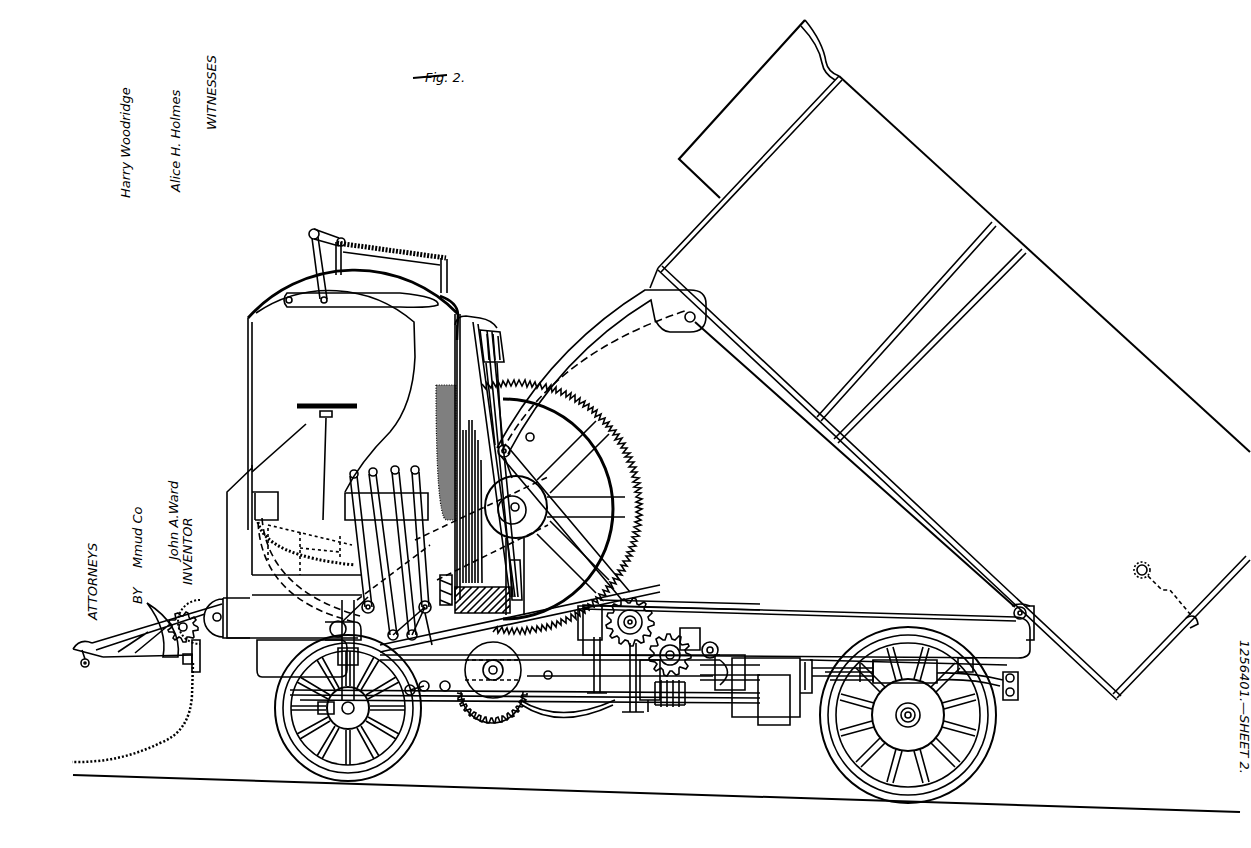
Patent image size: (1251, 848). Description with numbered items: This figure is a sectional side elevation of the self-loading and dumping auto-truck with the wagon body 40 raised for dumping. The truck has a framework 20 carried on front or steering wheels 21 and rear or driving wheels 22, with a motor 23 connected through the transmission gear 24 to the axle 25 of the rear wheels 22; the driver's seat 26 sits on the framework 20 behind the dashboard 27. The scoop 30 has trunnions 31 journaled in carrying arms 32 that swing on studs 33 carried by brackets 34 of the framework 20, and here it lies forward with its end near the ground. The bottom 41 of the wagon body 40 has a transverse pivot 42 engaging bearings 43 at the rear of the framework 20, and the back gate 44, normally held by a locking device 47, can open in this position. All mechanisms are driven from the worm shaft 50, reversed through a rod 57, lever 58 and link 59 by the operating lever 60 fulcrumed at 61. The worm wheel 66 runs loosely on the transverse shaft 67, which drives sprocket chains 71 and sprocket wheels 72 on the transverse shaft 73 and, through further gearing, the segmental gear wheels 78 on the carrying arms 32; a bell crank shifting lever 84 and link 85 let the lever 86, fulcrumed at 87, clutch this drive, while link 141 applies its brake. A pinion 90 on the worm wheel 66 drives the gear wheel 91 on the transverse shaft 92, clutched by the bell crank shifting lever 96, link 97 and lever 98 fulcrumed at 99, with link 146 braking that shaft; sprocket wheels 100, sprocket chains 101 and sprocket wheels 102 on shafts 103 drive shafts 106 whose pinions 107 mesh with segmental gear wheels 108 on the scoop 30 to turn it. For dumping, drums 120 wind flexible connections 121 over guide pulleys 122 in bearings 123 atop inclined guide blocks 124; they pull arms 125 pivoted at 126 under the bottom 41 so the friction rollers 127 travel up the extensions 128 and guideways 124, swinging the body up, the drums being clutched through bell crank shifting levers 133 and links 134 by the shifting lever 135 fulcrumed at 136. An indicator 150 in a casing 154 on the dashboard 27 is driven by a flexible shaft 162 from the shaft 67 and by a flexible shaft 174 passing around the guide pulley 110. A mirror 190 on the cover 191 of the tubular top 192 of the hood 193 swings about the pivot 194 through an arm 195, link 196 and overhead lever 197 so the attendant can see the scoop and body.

The framework 20 is at (822, 618).
The front or steering wheels 21 is at (280, 728).
The rear or driving wheels 22 is at (985, 728).
The motor 23 is at (294, 566).
The transmission gear 24 is at (773, 658).
The axle 25 is at (908, 706).
The driver's seat 26 is at (418, 390).
The dashboard 27 is at (228, 518).
The scoop 30 is at (165, 725).
The trunnions 31 is at (89, 665).
The carrying arms 32 is at (127, 638).
The studs 33 is at (452, 461).
The brackets 34 is at (330, 628).
The wagon body 40 is at (954, 313).
The bottom 41 is at (1000, 592).
The transverse pivot 42 is at (1012, 612).
The bearings 43 is at (1036, 620).
The back gate 44 is at (1210, 588).
The locking device 47 is at (1170, 586).
The worm shaft 50 is at (688, 706).
The rod 57 is at (735, 715).
The lever 58 is at (700, 670).
The link 59 is at (706, 656).
The operating lever 60 is at (350, 488).
The fulcrum 61 is at (363, 602).
The worm wheel 66 is at (704, 642).
The transverse shaft 67 is at (688, 628).
The sprocket chains 71 is at (600, 700).
The sprocket wheels 72 is at (570, 712).
The transverse shaft 73 is at (543, 675).
The segmental gear wheels 78 is at (622, 466).
The bell crank shifting lever 84 is at (632, 712).
The link 85 is at (444, 700).
The lever 86 is at (376, 472).
The fulcrum 87 is at (356, 668).
The pinion 90 is at (700, 614).
The gear wheel 91 is at (636, 606).
The transverse shaft 92 is at (668, 640).
The bell crank shifting lever 96 is at (589, 590).
The link 97 is at (440, 700).
The lever 98 is at (395, 470).
The fulcrum 99 is at (430, 609).
The sprocket wheels 100 is at (178, 666).
The sprocket chains 101 is at (226, 600).
The sprocket wheels 102 is at (222, 600).
The shafts 103 is at (222, 617).
The shafts 106 is at (183, 612).
The pinions 107 is at (200, 654).
The segmental gear wheels 108 is at (160, 605).
The guide pulley 110 is at (538, 500).
The drums 120 is at (512, 712).
The flexible connections 121 is at (516, 575).
The guide pulleys 122 is at (504, 332).
The bearings 123 is at (486, 322).
The inclined guide blocks 124 is at (492, 463).
The arms 125 is at (534, 433).
The pivot 126 is at (687, 322).
The friction rollers 127 is at (511, 453).
The extensions 128 is at (655, 702).
The bell crank shifting levers 133 is at (492, 676).
The links 134 is at (420, 690).
The shifting lever 135 is at (418, 470).
The fulcrum 136 is at (450, 590).
The link 141 is at (570, 636).
The link 146 is at (474, 612).
The indicator 150 is at (279, 457).
The casing 154 is at (278, 508).
The flexible shaft 162 is at (258, 548).
The flexible shaft 174 is at (320, 552).
The mirror 190 is at (391, 260).
The cover 191 is at (400, 246).
The tubular top 192 is at (425, 272).
The hood 193 is at (452, 305).
The pivot 194 is at (340, 236).
The arm 195 is at (318, 234).
The link 196 is at (312, 260).
The lever 197 is at (348, 303).